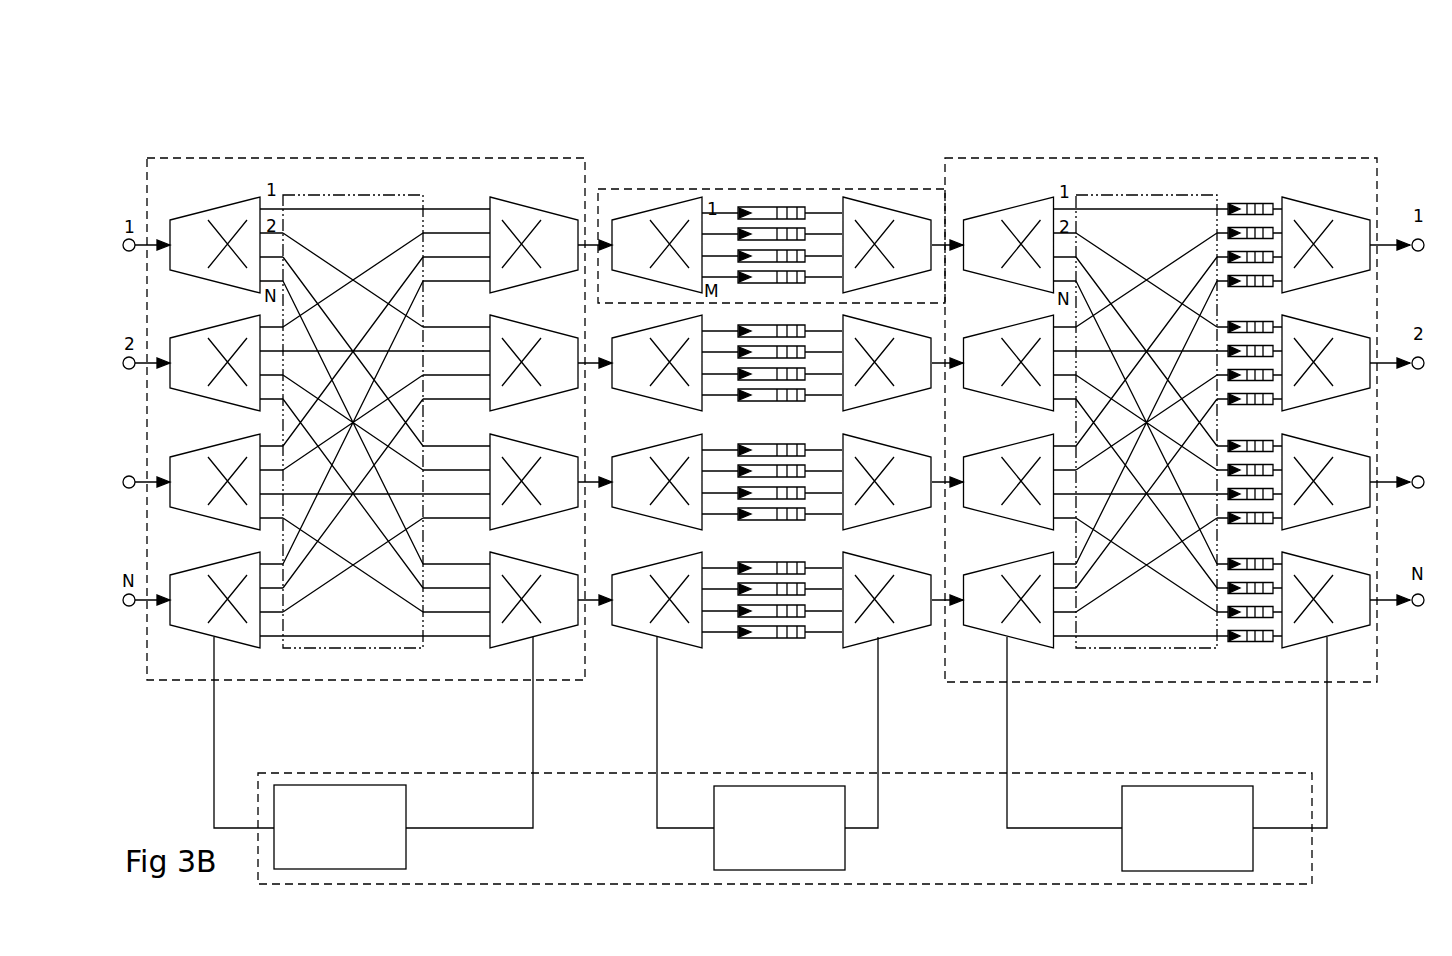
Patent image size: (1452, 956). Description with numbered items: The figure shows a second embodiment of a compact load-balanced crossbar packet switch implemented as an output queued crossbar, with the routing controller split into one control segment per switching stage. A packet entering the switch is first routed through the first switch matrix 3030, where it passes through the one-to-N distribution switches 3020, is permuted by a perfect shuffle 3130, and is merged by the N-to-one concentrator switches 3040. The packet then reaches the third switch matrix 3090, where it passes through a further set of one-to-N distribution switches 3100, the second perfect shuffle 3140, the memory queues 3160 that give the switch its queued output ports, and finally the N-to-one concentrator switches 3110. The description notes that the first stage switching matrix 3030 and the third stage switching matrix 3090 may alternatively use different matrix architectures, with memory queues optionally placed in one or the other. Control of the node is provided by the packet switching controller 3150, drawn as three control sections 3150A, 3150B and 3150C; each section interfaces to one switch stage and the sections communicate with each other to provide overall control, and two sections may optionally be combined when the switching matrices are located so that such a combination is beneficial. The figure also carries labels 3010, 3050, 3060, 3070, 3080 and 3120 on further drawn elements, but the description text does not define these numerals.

The optical splitter (first stage) 3010 is at (237, 650).
The 1:N distribution switches 3020 is at (240, 196).
The first switch matrix 3030 is at (367, 156).
The N:1 concentrator switches 3040 is at (520, 198).
The delay stage 3050 is at (613, 188).
The optical splitter (delay stage) 3060 is at (682, 197).
The delay lines 3070 is at (782, 201).
The optical combiner (delay stage) 3080 is at (870, 197).
The third switch matrix 3090 is at (998, 156).
The 1:N distribution switches 3100 is at (1112, 192).
The N:1 concentrator switches 3110 is at (1307, 197).
The output port 3120 is at (1410, 215).
The perfect shuffle 3130 is at (333, 658).
The second perfect shuffle 3140 is at (1255, 643).
The packet switching controller 3150 is at (852, 770).
The control section 3150A is at (340, 827).
The control section 3150B is at (779, 828).
The control section 3150C is at (1187, 828).
The memory queues 3160 is at (1345, 643).